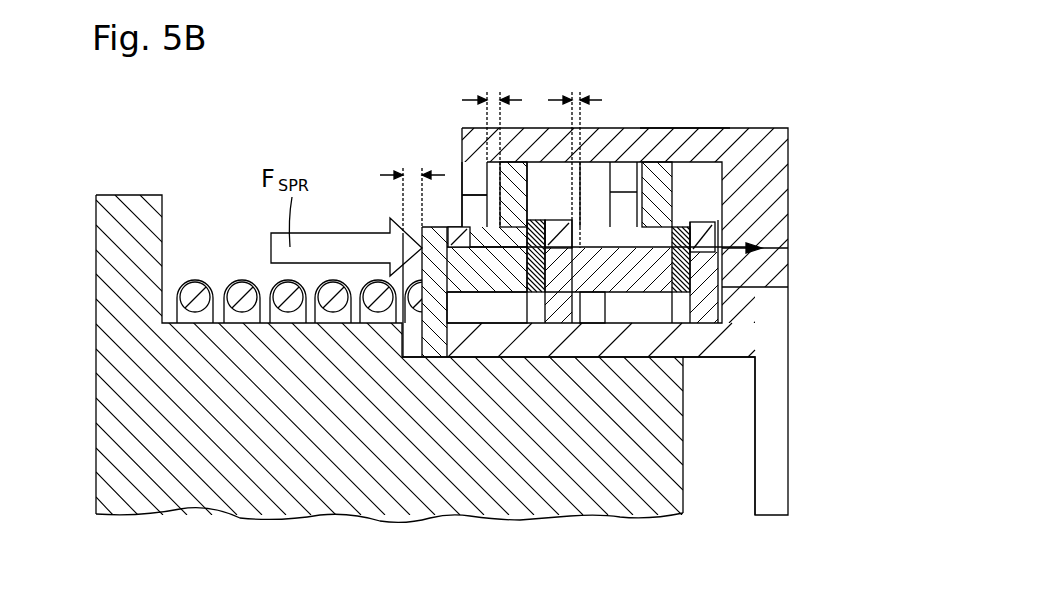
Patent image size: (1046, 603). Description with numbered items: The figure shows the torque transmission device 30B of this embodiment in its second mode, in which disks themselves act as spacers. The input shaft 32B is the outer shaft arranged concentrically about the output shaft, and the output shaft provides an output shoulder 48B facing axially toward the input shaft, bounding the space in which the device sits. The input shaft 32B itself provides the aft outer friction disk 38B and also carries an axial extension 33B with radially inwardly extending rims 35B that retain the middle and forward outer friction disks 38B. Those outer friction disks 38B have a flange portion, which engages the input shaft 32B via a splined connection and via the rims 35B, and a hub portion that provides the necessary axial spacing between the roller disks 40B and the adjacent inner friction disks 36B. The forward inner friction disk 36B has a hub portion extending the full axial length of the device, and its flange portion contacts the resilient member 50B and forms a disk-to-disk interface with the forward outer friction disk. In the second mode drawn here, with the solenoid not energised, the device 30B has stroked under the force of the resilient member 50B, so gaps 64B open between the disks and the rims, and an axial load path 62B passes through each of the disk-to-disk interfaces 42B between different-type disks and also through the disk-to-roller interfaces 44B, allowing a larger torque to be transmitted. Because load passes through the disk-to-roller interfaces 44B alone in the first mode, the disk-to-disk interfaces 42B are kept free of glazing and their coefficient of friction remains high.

The torque transmission device 30B is at (731, 440).
The input shaft 32B is at (752, 138).
The axial extension 33B is at (686, 140).
The rims 35B is at (462, 138).
The inner friction disks 36B is at (424, 256).
The outer friction disks 38B is at (513, 185).
The roller disks 40B is at (545, 232).
The disk-to-disk interfaces 42B is at (427, 275).
The disk-to-roller interfaces 44B is at (520, 282).
The output shoulder 48B is at (163, 223).
The resilient member 50B is at (242, 296).
The axial load path 62B is at (490, 295).
The gaps 64B is at (409, 166).